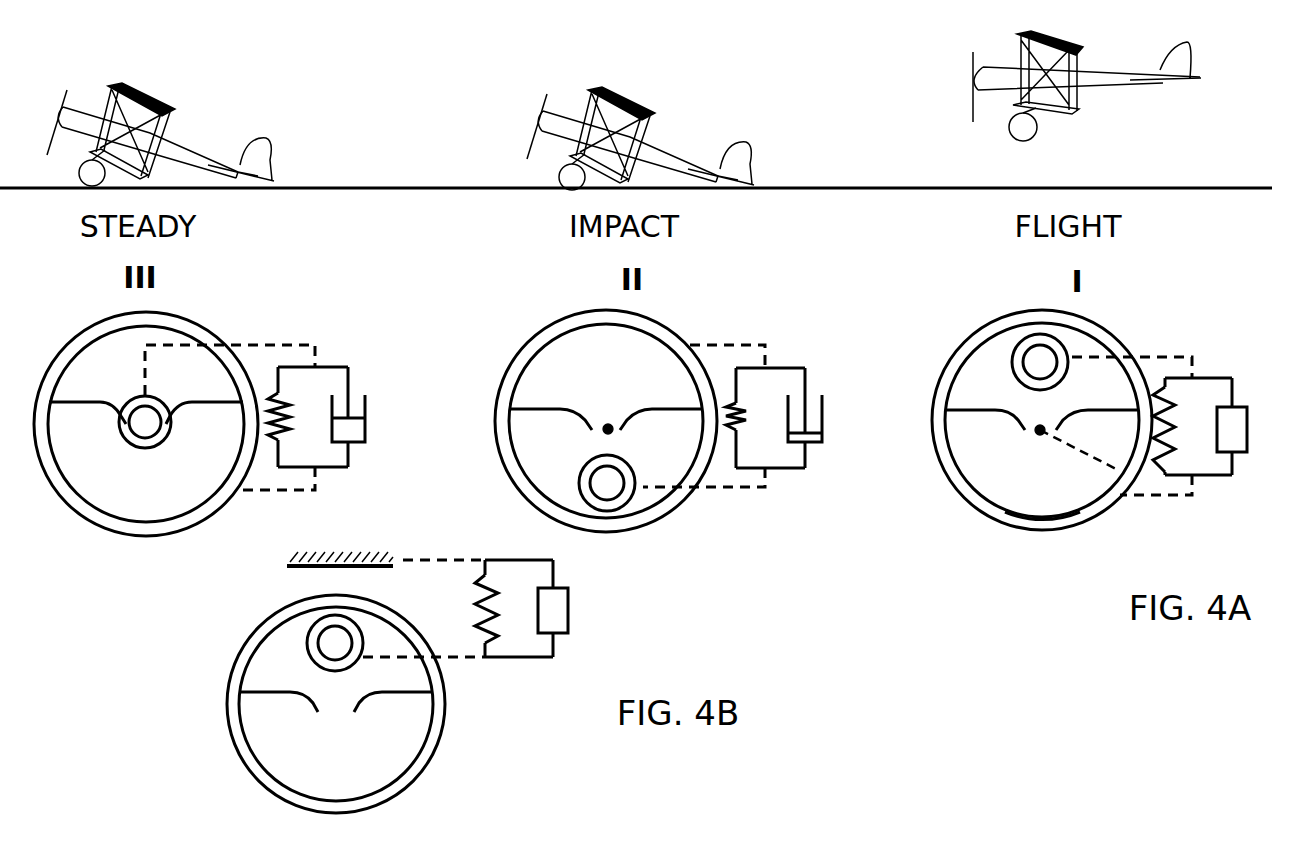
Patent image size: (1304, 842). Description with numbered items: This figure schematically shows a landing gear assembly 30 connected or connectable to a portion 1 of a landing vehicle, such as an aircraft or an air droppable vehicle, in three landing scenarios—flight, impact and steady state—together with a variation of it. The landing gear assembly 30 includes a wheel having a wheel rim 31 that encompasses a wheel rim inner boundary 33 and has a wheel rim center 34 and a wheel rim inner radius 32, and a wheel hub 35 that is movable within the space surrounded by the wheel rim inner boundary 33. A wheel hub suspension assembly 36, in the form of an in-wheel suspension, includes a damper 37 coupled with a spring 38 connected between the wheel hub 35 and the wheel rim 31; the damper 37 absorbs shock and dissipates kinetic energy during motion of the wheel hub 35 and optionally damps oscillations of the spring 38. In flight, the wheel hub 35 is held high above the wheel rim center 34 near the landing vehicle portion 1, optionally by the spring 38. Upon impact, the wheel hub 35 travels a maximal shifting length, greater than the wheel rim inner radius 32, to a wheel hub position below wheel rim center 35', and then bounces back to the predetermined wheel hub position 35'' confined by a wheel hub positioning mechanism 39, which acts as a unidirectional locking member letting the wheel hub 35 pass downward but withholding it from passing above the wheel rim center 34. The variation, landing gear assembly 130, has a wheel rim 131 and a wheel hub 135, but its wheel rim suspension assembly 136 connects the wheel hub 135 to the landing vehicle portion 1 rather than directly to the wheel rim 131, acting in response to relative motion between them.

In FIG. 4B, the portion of a landing vehicle 1 is at (283, 560).
In FIG. 4A, the landing gear assembly 30 is at (674, 303).
In FIG. 4A, the wheel rim 31 is at (47, 483).
In FIG. 4A, the wheel rim inner radius 32 is at (1083, 452).
In FIG. 4A, the wheel rim inner boundary 33 is at (1060, 512).
In FIG. 4A, the wheel rim center 34 is at (608, 424).
In FIG. 4A, the wheel hub 35 is at (1072, 344).
In FIG. 4A, the wheel hub position below wheel rim center 35' is at (656, 492).
In FIG. 4A, the predetermined wheel hub position 35'' is at (195, 466).
In FIG. 4A, the wheel hub suspension assembly 36 is at (710, 420).
In FIG. 4A, the damper 37 is at (365, 408).
In FIG. 4A, the spring 38 is at (283, 437).
In FIG. 4A, the wheel hub positioning mechanism 39 is at (103, 402).
In FIG. 4B, the landing gear assembly 130 is at (373, 689).
In FIG. 4B, the wheel rim 131 is at (230, 735).
In FIG. 4B, the wheel hub 135 is at (360, 630).
In FIG. 4B, the wheel rim suspension assembly 136 is at (496, 690).